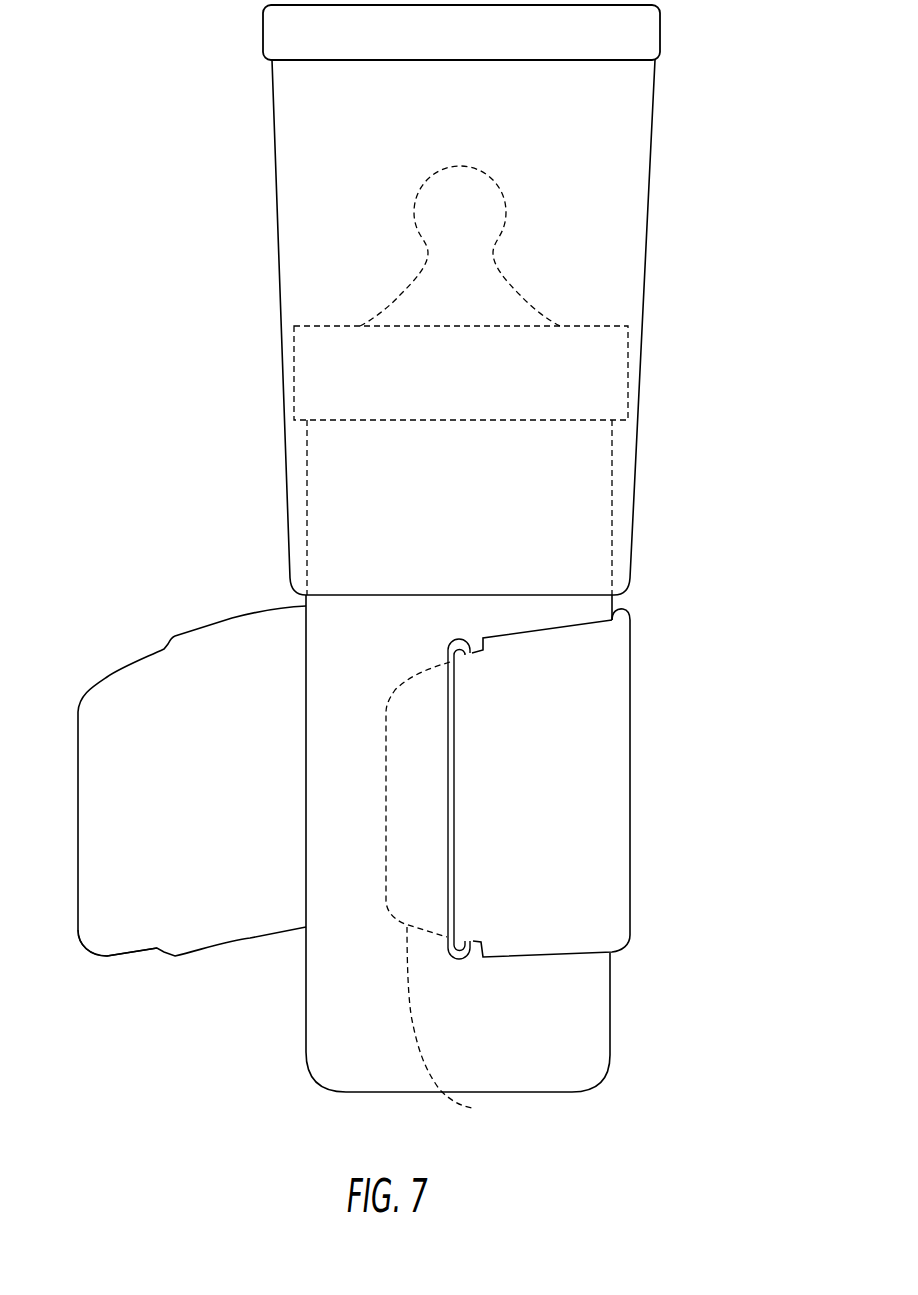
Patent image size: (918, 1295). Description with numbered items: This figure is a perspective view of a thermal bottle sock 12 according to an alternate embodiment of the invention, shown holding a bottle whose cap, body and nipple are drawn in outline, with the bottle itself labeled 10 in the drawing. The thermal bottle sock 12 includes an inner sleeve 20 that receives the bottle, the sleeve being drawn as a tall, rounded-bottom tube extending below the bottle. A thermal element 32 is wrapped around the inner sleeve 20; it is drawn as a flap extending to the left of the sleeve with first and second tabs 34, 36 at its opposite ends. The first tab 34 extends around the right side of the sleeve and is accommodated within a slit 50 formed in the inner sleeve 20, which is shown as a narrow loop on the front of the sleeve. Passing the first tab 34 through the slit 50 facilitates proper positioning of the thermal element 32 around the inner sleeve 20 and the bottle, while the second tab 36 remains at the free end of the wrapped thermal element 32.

The baby bottle 10 is at (538, 326).
The thermal bottle sock 12 is at (419, 812).
The inner sleeve 20 is at (338, 980).
The thermal element 32 is at (237, 666).
The first tab 34 is at (508, 867).
The second tab 36 is at (105, 956).
The slit 50 is at (450, 652).